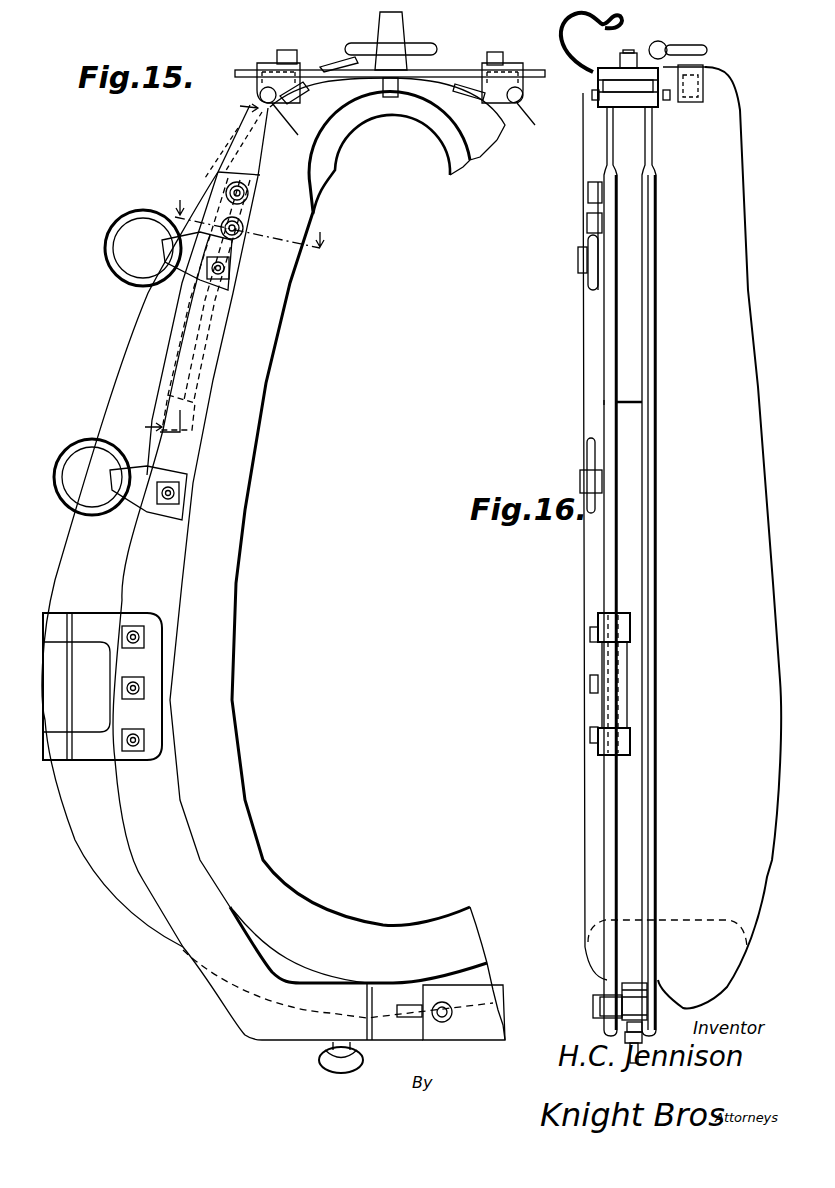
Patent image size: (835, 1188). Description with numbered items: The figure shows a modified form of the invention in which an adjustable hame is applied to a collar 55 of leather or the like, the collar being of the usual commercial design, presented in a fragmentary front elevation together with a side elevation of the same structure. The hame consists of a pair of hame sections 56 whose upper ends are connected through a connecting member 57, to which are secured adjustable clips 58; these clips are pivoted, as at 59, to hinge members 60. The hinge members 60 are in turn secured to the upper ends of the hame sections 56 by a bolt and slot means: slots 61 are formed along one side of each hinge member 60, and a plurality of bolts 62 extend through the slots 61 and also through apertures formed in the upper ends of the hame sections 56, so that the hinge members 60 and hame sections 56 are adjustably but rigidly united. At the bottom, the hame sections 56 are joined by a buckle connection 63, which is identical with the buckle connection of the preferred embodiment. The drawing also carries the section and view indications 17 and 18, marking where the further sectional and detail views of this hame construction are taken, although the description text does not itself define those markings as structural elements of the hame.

In FIG. 15, the section line 17- 17 is at (246, 229).
In FIG. 15, the view direction arrow 18 is at (190, 266).
In FIG. 15, the collar 55 is at (70, 556).
In FIG. 16, the collar 55 is at (752, 403).
In FIG. 15, the hame sections 56 is at (165, 592).
In FIG. 16, the hame sections 56 is at (620, 573).
In FIG. 15, the connecting member 57 is at (462, 70).
In FIG. 16, the connecting member 57 is at (610, 75).
In FIG. 15, the adjustable clips 58 is at (265, 63).
In FIG. 16, the adjustable clips 58 is at (595, 83).
In FIG. 15, the pivot 59 is at (417, 118).
In FIG. 16, the pivot 59 is at (670, 100).
In FIG. 15, the hinge members 60 is at (240, 144).
In FIG. 16, the hinge members 60 is at (636, 158).
In FIG. 15, the slots 61 is at (226, 295).
In FIG. 15, the bolts 62 is at (243, 228).
In FIG. 16, the bolts 62 is at (588, 222).
In FIG. 15, the buckle connection 63 is at (393, 1030).
In FIG. 16, the buckle connection 63 is at (622, 987).